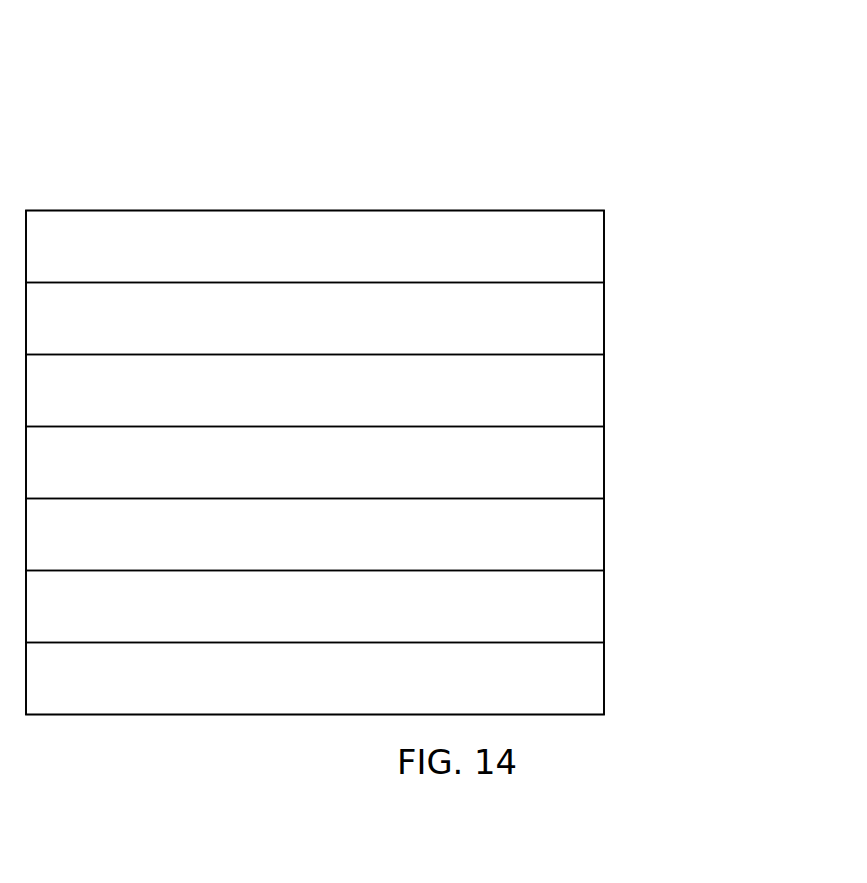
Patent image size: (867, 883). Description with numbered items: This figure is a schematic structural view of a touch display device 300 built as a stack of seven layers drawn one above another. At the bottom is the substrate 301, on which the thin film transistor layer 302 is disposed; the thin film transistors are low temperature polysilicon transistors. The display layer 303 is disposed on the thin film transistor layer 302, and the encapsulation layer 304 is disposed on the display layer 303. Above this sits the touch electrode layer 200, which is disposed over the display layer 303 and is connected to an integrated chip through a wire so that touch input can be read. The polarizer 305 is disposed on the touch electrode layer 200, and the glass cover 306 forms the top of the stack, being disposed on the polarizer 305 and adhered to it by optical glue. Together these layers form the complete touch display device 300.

The touch display device 300 is at (363, 65).
The glass cover 306 is at (580, 257).
The polarizer 305 is at (580, 329).
The touch electrode layer 200 is at (580, 401).
The encapsulation layer 304 is at (580, 473).
The display layer 303 is at (580, 545).
The thin film transistor layer 302 is at (580, 617).
The substrate 301 is at (580, 689).